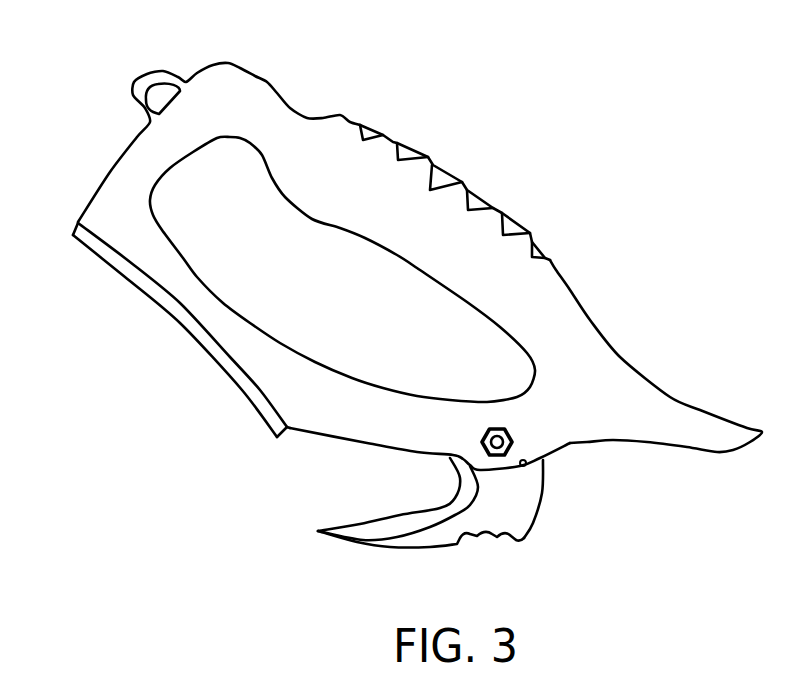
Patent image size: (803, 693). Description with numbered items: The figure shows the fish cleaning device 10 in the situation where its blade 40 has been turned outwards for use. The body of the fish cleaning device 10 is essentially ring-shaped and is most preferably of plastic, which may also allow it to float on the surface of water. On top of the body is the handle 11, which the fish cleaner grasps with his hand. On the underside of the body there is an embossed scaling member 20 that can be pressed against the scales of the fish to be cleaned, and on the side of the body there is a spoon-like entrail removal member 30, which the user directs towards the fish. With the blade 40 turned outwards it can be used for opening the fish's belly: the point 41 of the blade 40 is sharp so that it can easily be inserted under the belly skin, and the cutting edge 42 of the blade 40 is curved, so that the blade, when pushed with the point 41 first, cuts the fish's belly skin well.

The fish cleaning device 10 is at (507, 140).
The handle 11 is at (395, 137).
The scaling member 20 is at (223, 373).
The entrail removal member 30 is at (700, 407).
The blade 40 is at (390, 543).
The point 41 is at (317, 530).
The cutting edge 42 is at (407, 512).